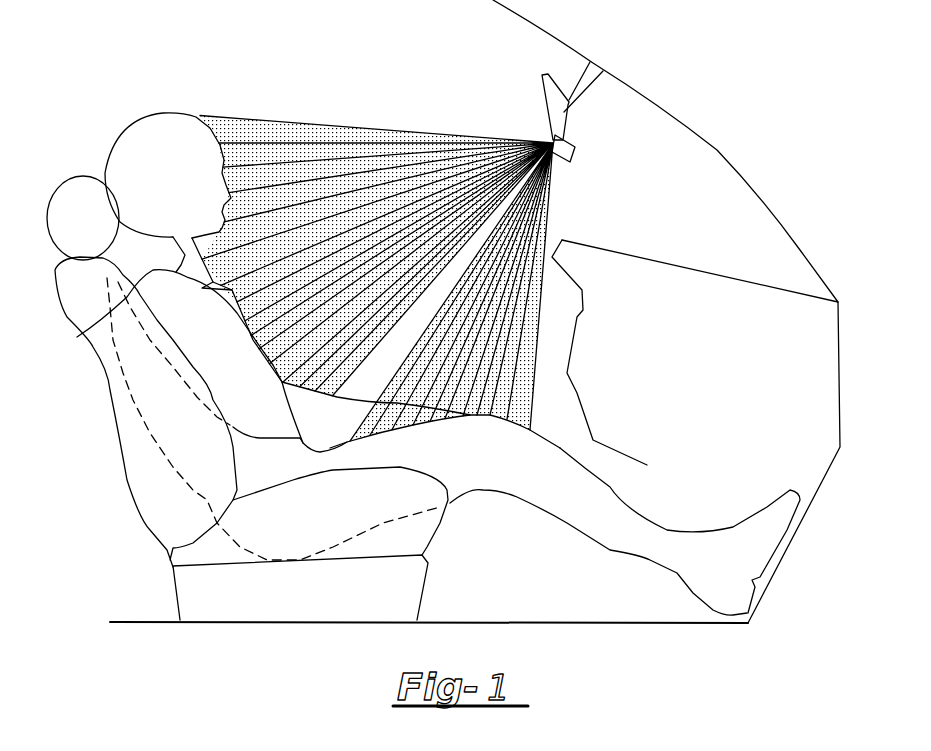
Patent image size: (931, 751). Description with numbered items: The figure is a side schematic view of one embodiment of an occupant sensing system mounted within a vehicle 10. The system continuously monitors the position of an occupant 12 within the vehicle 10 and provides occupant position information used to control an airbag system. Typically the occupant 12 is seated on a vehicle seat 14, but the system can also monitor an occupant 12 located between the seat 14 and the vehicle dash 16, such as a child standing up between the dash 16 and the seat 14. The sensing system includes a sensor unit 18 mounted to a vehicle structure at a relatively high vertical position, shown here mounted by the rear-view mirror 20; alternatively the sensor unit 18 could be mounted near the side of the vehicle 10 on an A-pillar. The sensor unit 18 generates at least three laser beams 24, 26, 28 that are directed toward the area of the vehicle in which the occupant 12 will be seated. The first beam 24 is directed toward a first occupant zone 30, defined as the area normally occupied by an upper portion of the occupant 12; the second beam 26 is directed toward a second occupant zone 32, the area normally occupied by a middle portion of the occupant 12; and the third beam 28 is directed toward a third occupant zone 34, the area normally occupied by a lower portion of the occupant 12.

The vehicle 10 is at (669, 78).
The occupant 12 is at (720, 557).
The vehicle seat 14 is at (170, 513).
The vehicle dash 16 is at (563, 242).
The sensor unit 18 is at (575, 148).
The rear-view mirror 20 is at (548, 117).
The first beam 24 is at (318, 133).
The second beam 26 is at (77, 337).
The third beam 28 is at (527, 313).
The first occupant zone 30 is at (147, 133).
The second occupant zone 32 is at (230, 377).
The third occupant zone 34 is at (483, 460).